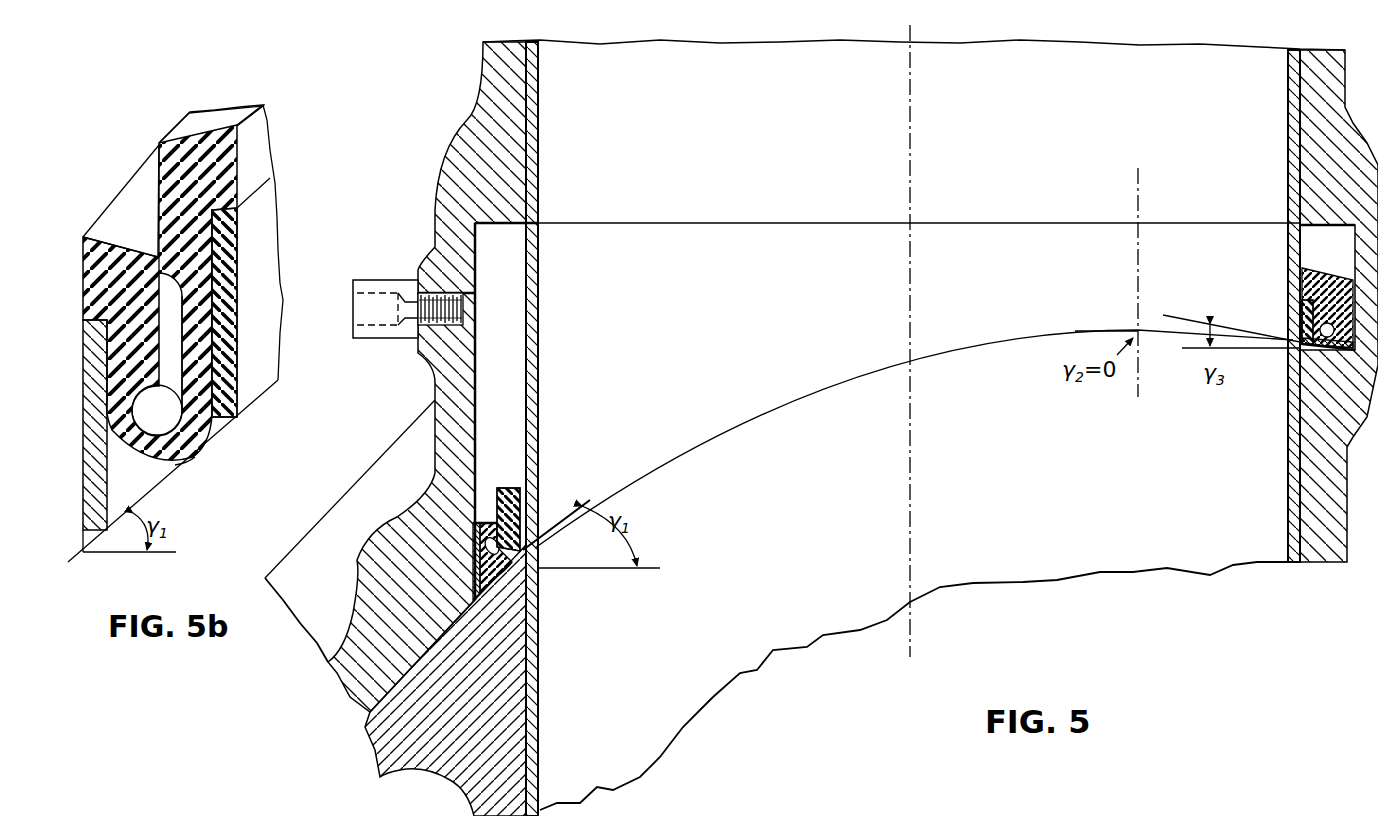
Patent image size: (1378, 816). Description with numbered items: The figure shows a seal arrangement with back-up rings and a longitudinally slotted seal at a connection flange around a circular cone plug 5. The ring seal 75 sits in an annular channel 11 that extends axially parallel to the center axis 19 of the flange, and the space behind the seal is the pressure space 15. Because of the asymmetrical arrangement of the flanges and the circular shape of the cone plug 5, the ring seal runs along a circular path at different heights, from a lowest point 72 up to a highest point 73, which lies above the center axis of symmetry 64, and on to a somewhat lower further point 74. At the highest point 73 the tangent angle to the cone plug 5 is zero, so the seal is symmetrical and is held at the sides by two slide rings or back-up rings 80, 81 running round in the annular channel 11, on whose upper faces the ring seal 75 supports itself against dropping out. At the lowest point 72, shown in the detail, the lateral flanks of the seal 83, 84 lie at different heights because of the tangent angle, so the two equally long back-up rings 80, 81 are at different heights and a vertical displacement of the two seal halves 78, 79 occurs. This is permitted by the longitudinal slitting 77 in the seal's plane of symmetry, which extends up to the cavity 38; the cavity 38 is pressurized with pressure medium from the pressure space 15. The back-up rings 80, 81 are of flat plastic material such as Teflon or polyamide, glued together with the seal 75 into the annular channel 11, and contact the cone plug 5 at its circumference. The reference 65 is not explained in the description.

In FIG. 5, the cone plug 5 is at (510, 742).
In FIG. 5b, the cone plug 5 is at (245, 415).
In FIG. 5, the annular channel 11 is at (477, 392).
In FIG. 5, the pressure space 15 is at (515, 412).
In FIG. 5, the center axis 19 is at (912, 195).
In FIG. 5b, the cavity 38 is at (148, 407).
In FIG. 5, the center axis of symmetry 64 is at (1142, 367).
In FIG. 5, the bore edge 65 is at (528, 208).
In FIG. 5, the lowest point 72 is at (514, 579).
In FIG. 5b, the lowest point 72 is at (198, 461).
In FIG. 5, the highest point 73 is at (1126, 321).
In FIG. 5, the further point 74 is at (1313, 358).
In FIG. 5, the ring seal 75 is at (470, 540).
In FIG. 5b, the ring seal 75 is at (75, 286).
In FIG. 5b, the longitudinal slitting 77 is at (157, 200).
In FIG. 5b, the seal half 78 is at (107, 228).
In FIG. 5b, the seal half 79 is at (218, 120).
In FIG. 5, the back-up ring 80 is at (473, 568).
In FIG. 5b, the back-up ring 80 is at (97, 420).
In FIG. 5, the back-up ring 81 is at (517, 528).
In FIG. 5b, the back-up ring 81 is at (222, 343).
In FIG. 5b, the lateral flank of the seal 83 is at (97, 358).
In FIG. 5b, the lateral flank of the seal 84 is at (213, 303).